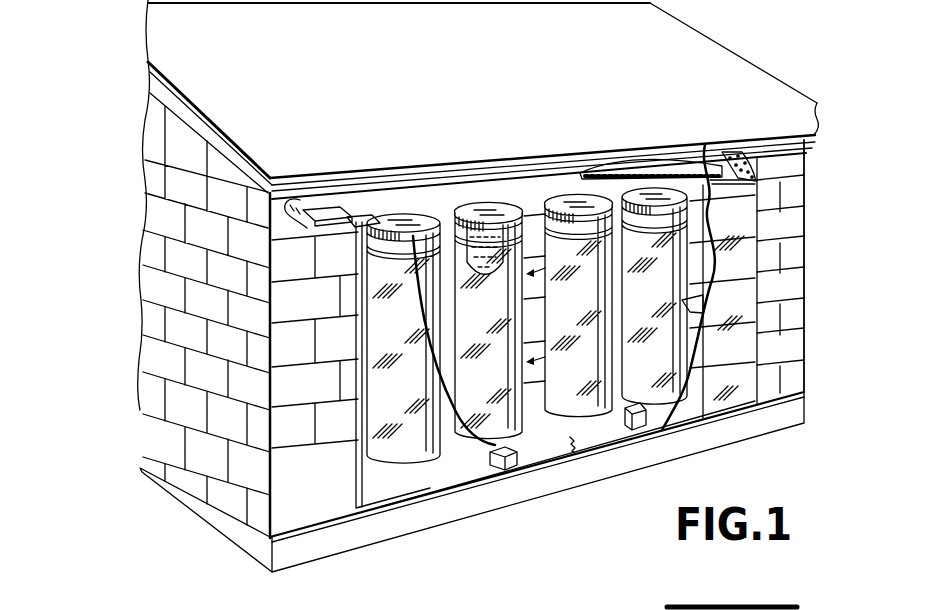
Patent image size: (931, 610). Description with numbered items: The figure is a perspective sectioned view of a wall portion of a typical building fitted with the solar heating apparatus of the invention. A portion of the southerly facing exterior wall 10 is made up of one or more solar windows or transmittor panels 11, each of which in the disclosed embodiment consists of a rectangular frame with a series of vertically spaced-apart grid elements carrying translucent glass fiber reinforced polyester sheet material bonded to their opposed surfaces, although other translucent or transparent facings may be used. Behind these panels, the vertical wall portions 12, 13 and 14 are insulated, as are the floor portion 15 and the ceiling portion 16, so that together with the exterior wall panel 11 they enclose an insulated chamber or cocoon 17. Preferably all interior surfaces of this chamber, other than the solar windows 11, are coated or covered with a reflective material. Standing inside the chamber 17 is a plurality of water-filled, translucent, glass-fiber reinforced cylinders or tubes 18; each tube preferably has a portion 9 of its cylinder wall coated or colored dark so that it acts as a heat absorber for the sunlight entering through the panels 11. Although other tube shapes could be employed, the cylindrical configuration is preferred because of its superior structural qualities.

The dark coated portion of cylinder wall 9 is at (487, 202).
The southerly facing exterior wall 10 is at (337, 520).
The solar windows or transmittor panels 11 is at (458, 478).
The vertical wall portion 12 is at (321, 203).
The vertical wall portion 13 is at (362, 208).
The vertical wall portion 14 is at (706, 150).
The floor portion 15 is at (543, 435).
The ceiling portion 16 is at (632, 167).
The insulated chamber or cocoon 17 is at (395, 485).
The water-filled translucent cylinders or tubes 18 is at (577, 214).